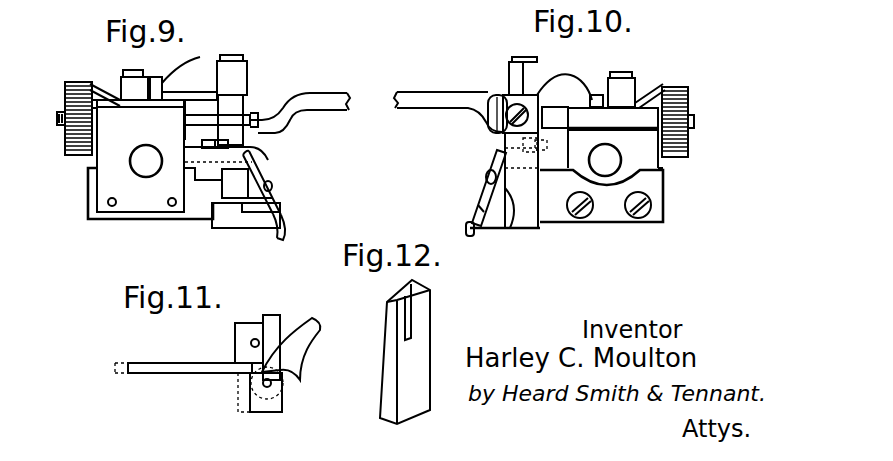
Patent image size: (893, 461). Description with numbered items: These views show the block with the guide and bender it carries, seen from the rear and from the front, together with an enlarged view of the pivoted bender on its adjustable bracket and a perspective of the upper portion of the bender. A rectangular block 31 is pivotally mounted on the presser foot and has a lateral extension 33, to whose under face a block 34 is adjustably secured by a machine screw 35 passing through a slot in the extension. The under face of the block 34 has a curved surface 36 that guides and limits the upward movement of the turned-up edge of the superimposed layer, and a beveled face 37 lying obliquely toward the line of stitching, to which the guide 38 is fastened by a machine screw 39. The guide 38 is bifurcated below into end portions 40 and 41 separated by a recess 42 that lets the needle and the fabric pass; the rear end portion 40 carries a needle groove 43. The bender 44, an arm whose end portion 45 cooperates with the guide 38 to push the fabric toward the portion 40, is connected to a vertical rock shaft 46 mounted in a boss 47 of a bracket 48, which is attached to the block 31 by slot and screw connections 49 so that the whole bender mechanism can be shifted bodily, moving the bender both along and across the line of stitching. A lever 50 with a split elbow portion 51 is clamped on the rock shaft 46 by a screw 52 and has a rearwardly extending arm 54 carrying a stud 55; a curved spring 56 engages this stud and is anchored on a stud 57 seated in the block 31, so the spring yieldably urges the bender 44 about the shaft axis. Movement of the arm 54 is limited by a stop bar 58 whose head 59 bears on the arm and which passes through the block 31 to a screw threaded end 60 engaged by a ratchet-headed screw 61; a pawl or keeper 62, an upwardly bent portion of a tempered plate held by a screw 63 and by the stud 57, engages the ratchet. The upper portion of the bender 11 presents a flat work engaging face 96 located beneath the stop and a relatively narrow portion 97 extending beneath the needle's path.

In FIG. 12, the bender 11 is at (420, 353).
In FIG. 9, the rectangular block 31 is at (110, 148).
In FIG. 10, the rectangular block 31 is at (645, 158).
In FIG. 9, the lateral extension 33 is at (244, 151).
In FIG. 9, the block 34 is at (249, 173).
In FIG. 9, the machine screw 35 is at (252, 139).
In FIG. 9, the curved surface 36 is at (270, 197).
In FIG. 9, the beveled face 37 is at (268, 183).
In FIG. 9, the guide 38 is at (274, 213).
In FIG. 10, the guide 38 is at (478, 190).
In FIG. 11, the guide 38 is at (267, 317).
In FIG. 9, the machine screw 39 is at (270, 185).
In FIG. 10, the machine screw 39 is at (489, 170).
In FIG. 9, the end portion 40 is at (283, 237).
In FIG. 10, the end portion 40 is at (473, 233).
In FIG. 11, the end portion 40 is at (316, 320).
In FIG. 10, the end portion 41 is at (502, 232).
In FIG. 11, the end portion 41 is at (301, 380).
In FIG. 10, the recess 42 is at (472, 208).
In FIG. 9, the needle groove 43 is at (281, 226).
In FIG. 10, the needle groove 43 is at (468, 228).
In FIG. 9, the bender arm 44 is at (247, 222).
In FIG. 11, the bender arm 44 is at (280, 328).
In FIG. 9, the end portion 45 is at (262, 223).
In FIG. 11, the end portion 45 is at (312, 320).
In FIG. 11, the vertical rock shaft 46 is at (270, 385).
In FIG. 10, the boss 47 is at (535, 187).
In FIG. 11, the boss 47 is at (260, 405).
In FIG. 9, the bracket 48 is at (90, 198).
In FIG. 10, the bracket 48 is at (568, 217).
In FIG. 11, the bracket 48 is at (205, 370).
In FIG. 9, the slot and screw connections 49 is at (168, 206).
In FIG. 10, the slot and screw connections 49 is at (638, 212).
In FIG. 9, the lever 50 is at (348, 93).
In FIG. 10, the lever 50 is at (485, 100).
In FIG. 10, the split elbow portion 51 is at (533, 97).
In FIG. 10, the screw 52 is at (503, 97).
In FIG. 9, the rearwardly extending arm 54 is at (208, 117).
In FIG. 9, the stud 55 is at (246, 57).
In FIG. 10, the stud 55 is at (533, 52).
In FIG. 9, the curved spring 56 is at (200, 57).
In FIG. 10, the curved spring 56 is at (575, 77).
In FIG. 9, the stud 57 is at (126, 70).
In FIG. 10, the stud 57 is at (632, 72).
In FIG. 9, the bar 58 is at (243, 113).
In FIG. 9, the head 59 is at (256, 118).
In FIG. 9, the screw threaded end 60 is at (57, 117).
In FIG. 10, the screw threaded end 60 is at (695, 117).
In FIG. 9, the screw 61 is at (66, 88).
In FIG. 10, the screw 61 is at (690, 96).
In FIG. 9, the pawl or keeper 62 is at (89, 83).
In FIG. 10, the pawl or keeper 62 is at (668, 82).
In FIG. 9, the screw 63 is at (160, 78).
In FIG. 10, the screw 63 is at (597, 100).
In FIG. 12, the flat work engaging face 96 is at (423, 288).
In FIG. 12, the relatively narrow portion 97 is at (397, 297).